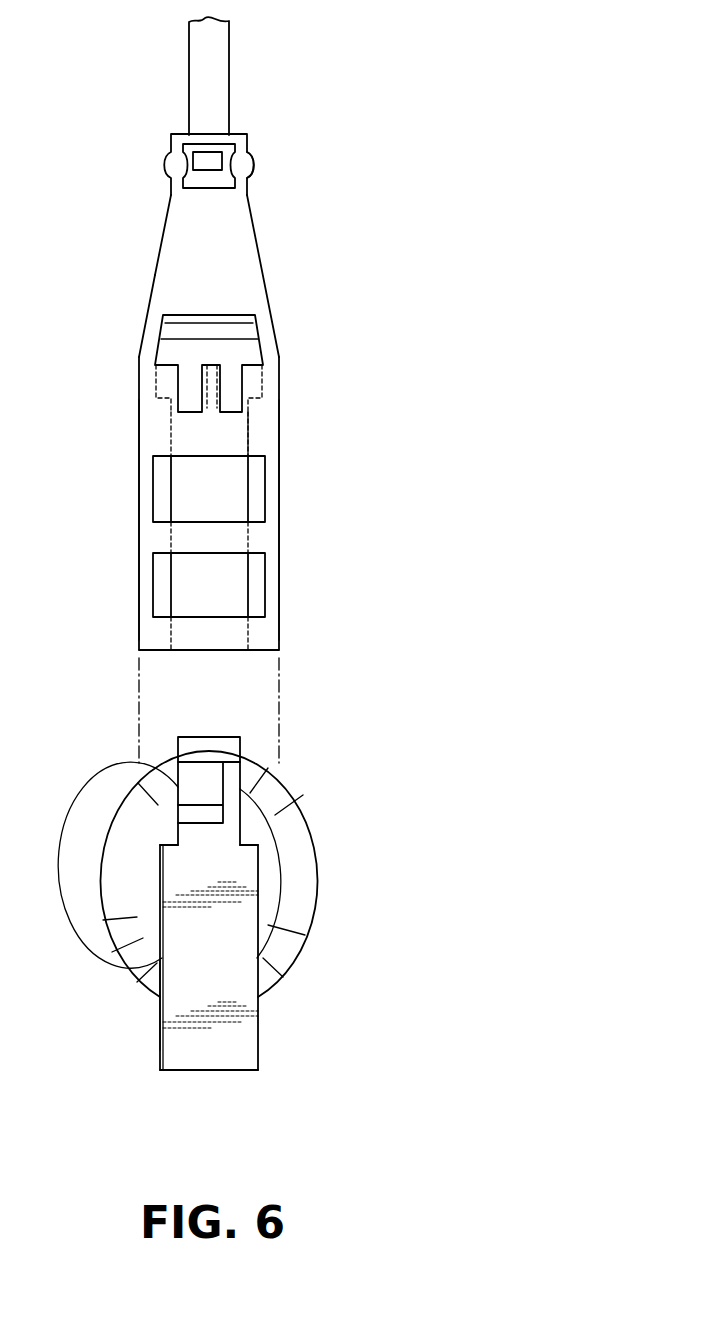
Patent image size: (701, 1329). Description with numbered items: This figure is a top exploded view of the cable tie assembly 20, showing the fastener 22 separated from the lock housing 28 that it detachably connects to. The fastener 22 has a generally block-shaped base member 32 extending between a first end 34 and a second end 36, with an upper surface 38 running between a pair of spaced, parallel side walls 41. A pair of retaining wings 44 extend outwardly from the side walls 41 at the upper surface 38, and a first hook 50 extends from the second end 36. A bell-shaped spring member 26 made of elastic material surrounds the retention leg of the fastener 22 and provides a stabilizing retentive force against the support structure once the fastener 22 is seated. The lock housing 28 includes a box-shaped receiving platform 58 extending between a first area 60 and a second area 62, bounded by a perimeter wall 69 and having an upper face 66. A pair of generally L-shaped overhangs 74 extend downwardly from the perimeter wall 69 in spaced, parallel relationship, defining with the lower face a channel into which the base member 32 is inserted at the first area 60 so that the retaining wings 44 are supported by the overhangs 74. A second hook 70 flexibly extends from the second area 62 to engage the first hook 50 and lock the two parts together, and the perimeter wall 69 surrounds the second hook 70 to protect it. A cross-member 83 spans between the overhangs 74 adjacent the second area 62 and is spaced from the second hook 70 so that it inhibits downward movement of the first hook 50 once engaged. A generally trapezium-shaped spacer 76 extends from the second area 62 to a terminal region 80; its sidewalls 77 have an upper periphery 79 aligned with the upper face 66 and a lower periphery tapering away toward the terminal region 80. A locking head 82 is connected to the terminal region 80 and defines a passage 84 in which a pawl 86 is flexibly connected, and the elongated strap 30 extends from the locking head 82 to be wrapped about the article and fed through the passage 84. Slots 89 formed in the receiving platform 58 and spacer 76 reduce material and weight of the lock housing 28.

The cable tie assembly 20 is at (330, 355).
The fastener 22 is at (264, 922).
The spring member 26 is at (302, 865).
The lock housing 28 is at (282, 502).
The elongated strap 30 is at (218, 77).
The base member 32 is at (234, 982).
The first end 34 is at (233, 1070).
The second end 36 is at (245, 846).
The upper surface 38 is at (188, 980).
The side walls 41 is at (250, 817).
The retaining wings 44 is at (245, 878).
The first hook 50 is at (222, 745).
The receiving platform 58 is at (147, 535).
The first area 60 is at (148, 640).
The second area 62 is at (270, 375).
The upper face 66 is at (262, 423).
The perimeter wall 69 is at (280, 573).
The second hook 70 is at (207, 365).
The overhangs 74 is at (248, 492).
The spacer 76 is at (158, 278).
The sidewalls 77 is at (258, 248).
The upper periphery 79 is at (172, 228).
The terminal region 80 is at (238, 200).
The locking head 82 is at (247, 165).
The cross-member 83 is at (253, 334).
The passage 84 is at (207, 187).
The pawl 86 is at (206, 160).
The slots 89 is at (160, 483).